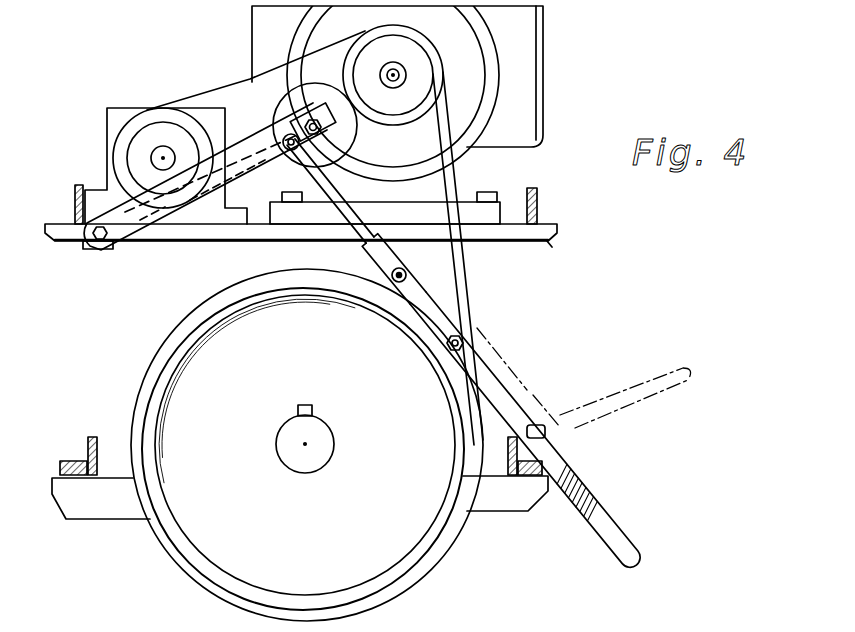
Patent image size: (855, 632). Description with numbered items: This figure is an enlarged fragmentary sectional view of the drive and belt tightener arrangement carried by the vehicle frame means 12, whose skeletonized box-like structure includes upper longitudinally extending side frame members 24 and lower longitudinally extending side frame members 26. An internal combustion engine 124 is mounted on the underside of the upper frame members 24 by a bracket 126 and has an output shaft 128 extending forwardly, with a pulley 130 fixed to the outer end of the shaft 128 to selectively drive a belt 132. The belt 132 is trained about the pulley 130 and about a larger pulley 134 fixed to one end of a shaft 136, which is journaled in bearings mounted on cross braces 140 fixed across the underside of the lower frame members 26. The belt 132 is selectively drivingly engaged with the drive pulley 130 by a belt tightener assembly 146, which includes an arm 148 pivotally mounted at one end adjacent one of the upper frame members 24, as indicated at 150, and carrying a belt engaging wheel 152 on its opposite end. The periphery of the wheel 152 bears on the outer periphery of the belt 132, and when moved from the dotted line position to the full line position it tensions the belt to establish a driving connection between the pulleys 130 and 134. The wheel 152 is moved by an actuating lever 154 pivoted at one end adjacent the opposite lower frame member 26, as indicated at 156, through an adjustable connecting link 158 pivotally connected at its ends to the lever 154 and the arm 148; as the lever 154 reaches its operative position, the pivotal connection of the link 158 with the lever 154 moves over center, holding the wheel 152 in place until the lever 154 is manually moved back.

The vehicle frame means 12 is at (567, 222).
The upper longitudinally extending parallel side frame members 24 is at (60, 245).
The lower longitudinally extending parallel side frame members 26 is at (88, 450).
The internal combustion engine 124 is at (543, 43).
The bracket 126 is at (552, 245).
The output shaft 128 is at (400, 72).
The pulley 130 is at (417, 80).
The belt 132 is at (462, 270).
The larger pulley 134 is at (418, 552).
The shaft 136 is at (335, 448).
The cross braces 140 is at (513, 500).
The belt tightener assembly 146 is at (253, 118).
The arm 148 is at (148, 240).
The pivotal mounting of arm 150 is at (110, 251).
The belt engaging wheel 152 is at (278, 105).
The actuating lever 154 is at (600, 513).
The lever pivot 156 is at (545, 432).
The adjustable connecting link 158 is at (466, 345).